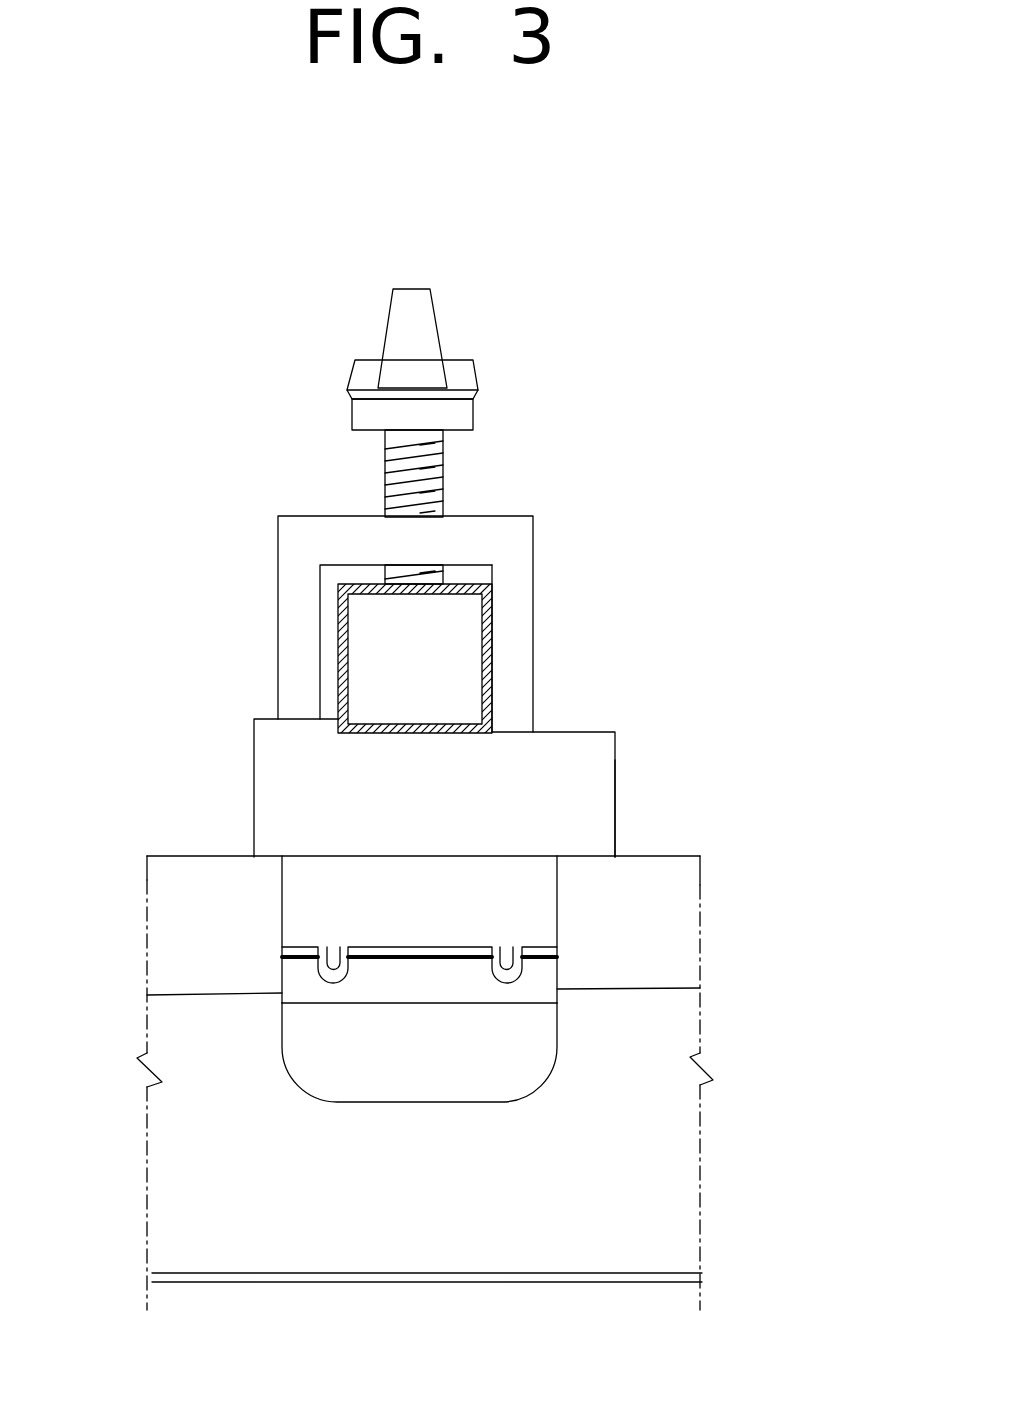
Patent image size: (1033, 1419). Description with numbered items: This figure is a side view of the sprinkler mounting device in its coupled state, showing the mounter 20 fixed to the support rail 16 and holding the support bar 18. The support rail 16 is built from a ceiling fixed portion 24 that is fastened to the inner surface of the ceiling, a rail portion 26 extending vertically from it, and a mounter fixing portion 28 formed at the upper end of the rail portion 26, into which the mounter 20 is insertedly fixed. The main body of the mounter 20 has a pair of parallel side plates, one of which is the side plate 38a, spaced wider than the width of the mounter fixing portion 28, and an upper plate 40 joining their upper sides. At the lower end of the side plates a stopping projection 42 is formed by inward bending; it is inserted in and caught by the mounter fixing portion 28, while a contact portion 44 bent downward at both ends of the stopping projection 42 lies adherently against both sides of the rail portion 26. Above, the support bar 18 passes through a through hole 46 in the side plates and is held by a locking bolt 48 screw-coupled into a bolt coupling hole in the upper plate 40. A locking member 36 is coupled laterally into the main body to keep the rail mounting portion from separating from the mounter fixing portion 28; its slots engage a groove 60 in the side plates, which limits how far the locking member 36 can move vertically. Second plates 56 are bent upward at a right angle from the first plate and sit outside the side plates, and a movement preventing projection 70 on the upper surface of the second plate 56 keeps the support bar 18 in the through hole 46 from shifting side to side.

The support rail 16 is at (452, 1117).
The support bar 18 is at (358, 580).
The mounter 20 is at (420, 569).
The ceiling fixed portion 24 is at (613, 1273).
The rail portion 26 is at (657, 1150).
The mounter fixing portion 28 is at (652, 927).
The locking member 36 is at (509, 786).
The side plate 38a is at (307, 667).
The upper plate 40 is at (295, 515).
The stopping projection 42 is at (376, 1003).
The contact portion 44 is at (483, 1063).
The through hole 46 is at (334, 648).
The locking bolt 48 is at (462, 370).
The second plate 56 is at (593, 800).
The groove 60 is at (305, 901).
The movement preventing projection 70 is at (513, 730).